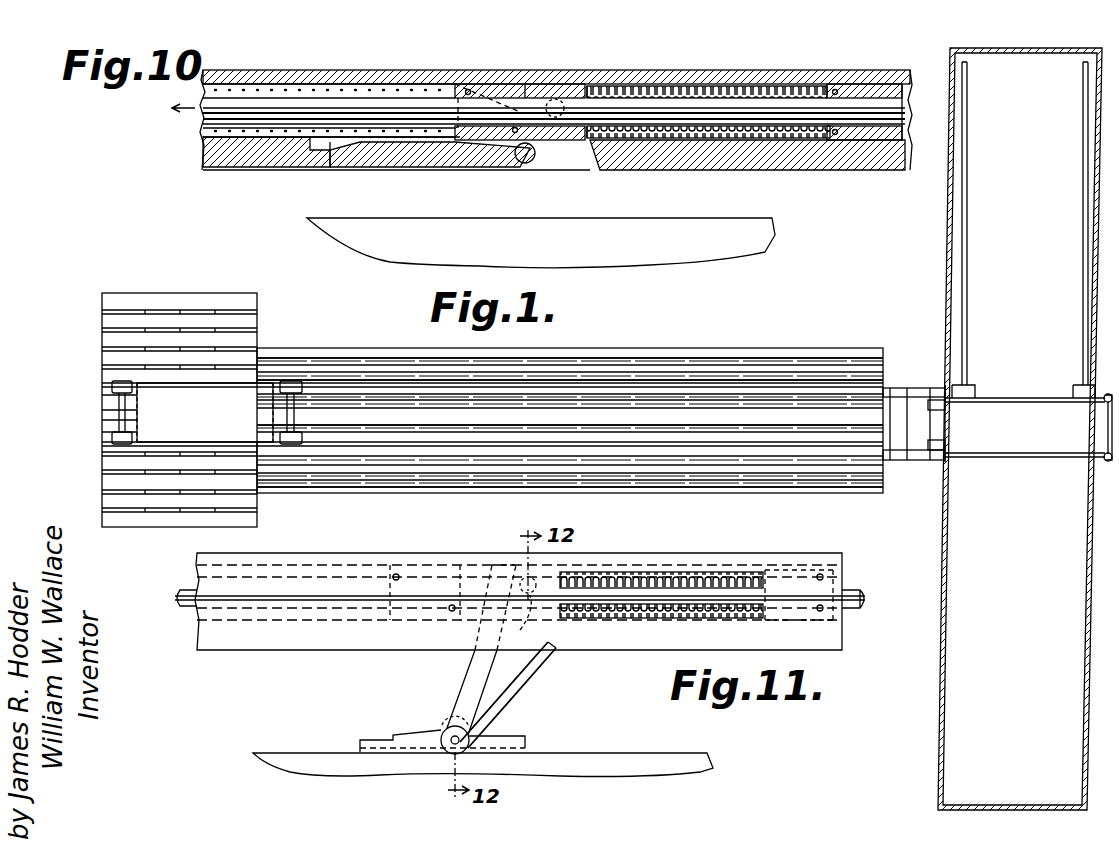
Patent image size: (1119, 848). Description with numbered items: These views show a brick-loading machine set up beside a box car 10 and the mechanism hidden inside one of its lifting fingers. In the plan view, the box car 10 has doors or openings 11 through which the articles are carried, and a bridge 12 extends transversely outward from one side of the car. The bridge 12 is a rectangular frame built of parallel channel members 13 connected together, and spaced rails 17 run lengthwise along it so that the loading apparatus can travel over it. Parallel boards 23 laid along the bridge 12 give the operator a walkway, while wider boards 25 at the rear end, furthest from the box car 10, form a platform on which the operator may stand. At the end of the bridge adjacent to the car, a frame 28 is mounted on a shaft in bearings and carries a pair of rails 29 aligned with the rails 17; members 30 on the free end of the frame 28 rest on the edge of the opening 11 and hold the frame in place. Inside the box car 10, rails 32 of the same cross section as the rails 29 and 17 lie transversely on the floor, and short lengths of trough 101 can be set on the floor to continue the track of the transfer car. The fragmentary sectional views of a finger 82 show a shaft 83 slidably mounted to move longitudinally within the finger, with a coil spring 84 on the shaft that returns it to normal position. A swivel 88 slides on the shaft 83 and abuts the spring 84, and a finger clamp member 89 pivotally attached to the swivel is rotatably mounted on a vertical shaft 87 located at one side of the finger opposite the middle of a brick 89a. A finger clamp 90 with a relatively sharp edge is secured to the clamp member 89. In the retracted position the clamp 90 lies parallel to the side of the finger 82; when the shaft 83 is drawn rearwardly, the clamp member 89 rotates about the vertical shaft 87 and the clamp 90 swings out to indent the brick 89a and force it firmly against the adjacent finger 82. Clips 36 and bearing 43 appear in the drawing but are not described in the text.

In FIG. 1, the box car 10 is at (952, 180).
In FIG. 1, the short lengths of trough 101 is at (1005, 273).
In FIG. 1, the doors or openings 11 is at (946, 366).
In FIG. 11, the bridge 12 is at (405, 578).
In FIG. 1, the channel members 13 is at (562, 362).
In FIG. 1, the rails 17 is at (812, 386).
In FIG. 1, the boards 23 is at (748, 374).
In FIG. 1, the boards 25 is at (200, 298).
In FIG. 1, the frame 28 is at (900, 462).
In FIG. 1, the rails 29 is at (905, 394).
In FIG. 1, the members 30 is at (946, 442).
In FIG. 1, the rails 32 is at (1042, 403).
In FIG. 1, the clips 36 is at (116, 384).
In FIG. 1, the bearing 43 is at (112, 440).
In FIG. 10, the fingers 82 is at (356, 76).
In FIG. 11, the fingers 82 is at (285, 567).
In FIG. 10, the shafts 83 is at (272, 104).
In FIG. 11, the shafts 83 is at (187, 606).
In FIG. 10, the coil spring 84 is at (700, 90).
In FIG. 10, the vertically arranged shafts 87 is at (524, 163).
In FIG. 11, the vertically arranged shafts 87 is at (545, 645).
In FIG. 10, the swivel 88 is at (590, 150).
In FIG. 10, the finger clamp member 89 is at (440, 160).
In FIG. 11, the finger clamp member 89 is at (505, 696).
In FIG. 10, the brick 89a is at (765, 252).
In FIG. 11, the brick 89a is at (713, 768).
In FIG. 10, the finger clamp 90 is at (400, 142).